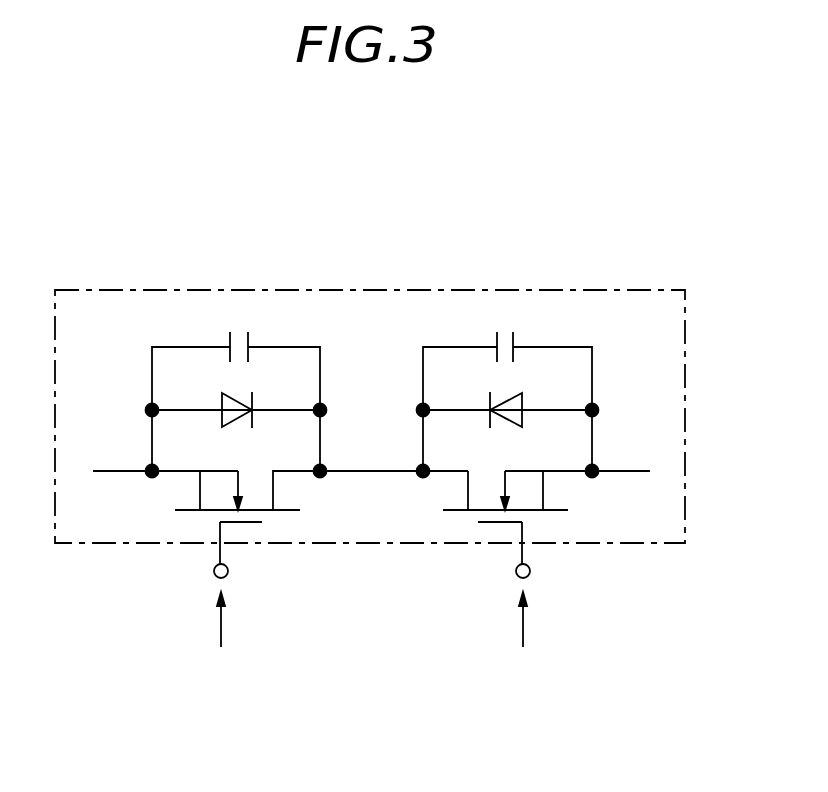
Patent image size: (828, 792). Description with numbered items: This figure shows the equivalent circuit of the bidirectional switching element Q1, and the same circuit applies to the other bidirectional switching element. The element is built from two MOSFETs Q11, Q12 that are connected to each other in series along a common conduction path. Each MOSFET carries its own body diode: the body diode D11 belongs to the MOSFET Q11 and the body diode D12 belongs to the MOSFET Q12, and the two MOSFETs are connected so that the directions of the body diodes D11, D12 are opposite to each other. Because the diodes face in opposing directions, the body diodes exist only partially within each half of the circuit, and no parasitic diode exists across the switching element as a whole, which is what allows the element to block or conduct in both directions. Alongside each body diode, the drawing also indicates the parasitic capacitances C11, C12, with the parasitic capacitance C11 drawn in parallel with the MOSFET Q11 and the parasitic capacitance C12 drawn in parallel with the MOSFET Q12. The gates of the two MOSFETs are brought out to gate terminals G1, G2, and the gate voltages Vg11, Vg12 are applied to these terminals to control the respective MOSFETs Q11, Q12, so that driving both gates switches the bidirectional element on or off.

The bidirectional switching element Q1 is at (478, 290).
The parasitic capacitance C11 is at (199, 401).
The parasitic capacitance C12 is at (543, 401).
The body diode D11 is at (202, 410).
The body diode D12 is at (540, 410).
The MOSFET Q11 is at (273, 515).
The MOSFET Q12 is at (540, 515).
The gate terminal G1 is at (200, 574).
The gate terminal G2 is at (499, 574).
The gate voltage Vg11 (Vg21) Vg11 is at (220, 639).
The gate voltage Vg12 (Vg22) Vg12 is at (524, 639).